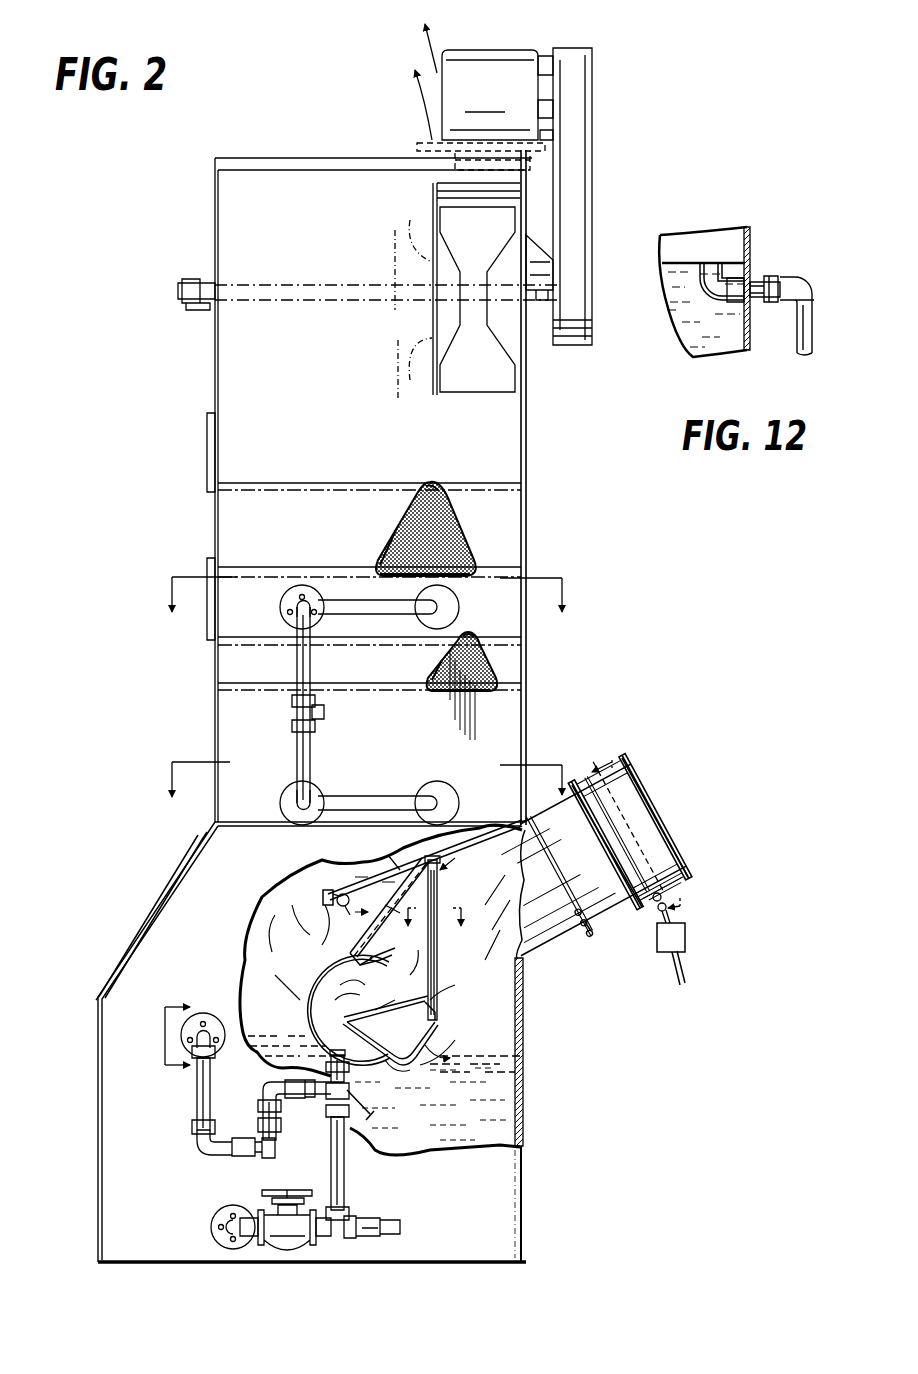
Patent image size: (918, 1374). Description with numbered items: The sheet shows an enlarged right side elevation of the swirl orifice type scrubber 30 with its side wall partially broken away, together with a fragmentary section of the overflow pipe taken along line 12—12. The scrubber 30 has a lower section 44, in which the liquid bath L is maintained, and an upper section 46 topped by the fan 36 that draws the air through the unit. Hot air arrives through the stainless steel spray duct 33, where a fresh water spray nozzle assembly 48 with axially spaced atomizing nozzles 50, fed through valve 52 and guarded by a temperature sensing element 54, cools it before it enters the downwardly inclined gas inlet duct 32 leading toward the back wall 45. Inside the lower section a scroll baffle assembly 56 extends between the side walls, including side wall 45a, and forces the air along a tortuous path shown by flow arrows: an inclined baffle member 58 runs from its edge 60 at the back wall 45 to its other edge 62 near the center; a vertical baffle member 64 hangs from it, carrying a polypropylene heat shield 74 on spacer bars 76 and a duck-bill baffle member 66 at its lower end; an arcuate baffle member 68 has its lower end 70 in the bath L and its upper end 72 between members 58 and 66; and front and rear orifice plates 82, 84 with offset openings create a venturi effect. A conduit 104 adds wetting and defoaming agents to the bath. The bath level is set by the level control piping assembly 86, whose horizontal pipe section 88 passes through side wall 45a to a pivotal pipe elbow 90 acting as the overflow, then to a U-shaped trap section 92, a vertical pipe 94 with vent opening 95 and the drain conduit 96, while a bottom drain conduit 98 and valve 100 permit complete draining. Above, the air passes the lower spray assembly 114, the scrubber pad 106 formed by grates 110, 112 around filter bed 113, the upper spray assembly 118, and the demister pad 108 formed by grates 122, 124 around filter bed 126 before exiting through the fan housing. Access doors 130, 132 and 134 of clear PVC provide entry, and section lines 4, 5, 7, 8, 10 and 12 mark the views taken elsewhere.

In FIG. 2, the fan 36 is at (447, 215).
In FIG. 2, the upper section 46 is at (526, 430).
In FIG. 2, the access door 130 is at (207, 425).
In FIG. 2, the access door 132 is at (207, 635).
In FIG. 2, the access door 134 is at (178, 868).
In FIG. 2, the lower section 44 is at (103, 1105).
In FIG. 2, the upper perforated polypropylene support grate 122 is at (432, 482).
In FIG. 2, the intermediate filter bed 126 is at (400, 527).
In FIG. 2, the demister pad 108 is at (458, 512).
In FIG. 2, the lower perforated polypropylene support grate 124 is at (407, 574).
In FIG. 2, the scrubber pad 106 is at (492, 662).
In FIG. 2, the upper perforated polypropylene support grate 110 is at (465, 634).
In FIG. 2, the intermediate filter bed 113 is at (443, 663).
In FIG. 2, the lower perforated polypropylene support grate 112 is at (460, 690).
In FIG. 2, the upper fresh water spray assembly 118 is at (370, 598).
In FIG. 2, the lower fresh water spray assembly 114 is at (392, 800).
In FIG. 2, the section line 10- 10 is at (367, 583).
In FIG. 2, the section line 8- 8 is at (366, 768).
In FIG. 2, the section line 12- 12 is at (167, 1033).
In FIG. 2, the section line 5- 5 is at (434, 928).
In FIG. 2, the section line 7- 7 is at (385, 874).
In FIG. 2, the section line 4- 4 is at (642, 829).
In FIG. 2, the swirl orifice type scrubber 30 is at (567, 632).
In FIG. 2, the gas inlet duct 32 is at (540, 952).
In FIG. 2, the atomizing nozzles 50 is at (603, 792).
In FIG. 2, the fresh water spray duct 33 is at (684, 876).
In FIG. 2, the temperature sensing element 54 is at (592, 915).
In FIG. 2, the fresh water spray nozzle assembly 48 is at (656, 910).
In FIG. 2, the valve 52 is at (688, 926).
In FIG. 2, the edge 60 is at (522, 820).
In FIG. 2, the back wall 45 is at (519, 1012).
In FIG. 2, the side wall 45a is at (500, 1210).
In FIG. 12, the side wall 45a is at (751, 235).
In FIG. 2, the liquid bath L is at (520, 1062).
In FIG. 2, the scroll baffle assembly 56 is at (335, 962).
In FIG. 2, the downwardly inclined baffle member 58 is at (435, 848).
In FIG. 2, the edge 62 is at (328, 896).
In FIG. 2, the conduit 104 is at (350, 912).
In FIG. 2, the rear orifice plate 84 is at (385, 930).
In FIG. 2, the front orifice plate 82 is at (372, 950).
In FIG. 2, the upper horizontally extending end 72 is at (375, 968).
In FIG. 2, the heat shield 74 is at (439, 880).
In FIG. 2, the spacer bars 76 is at (441, 860).
In FIG. 2, the vertical baffle member 64 is at (425, 998).
In FIG. 2, the arcuate baffle member 68 is at (305, 1010).
In FIG. 2, the duck-bill baffle member 66 is at (405, 1062).
In FIG. 2, the lower end 70 is at (372, 1115).
In FIG. 2, the vent opening 95 is at (333, 1070).
In FIG. 2, the vertical pipe 94 is at (345, 1178).
In FIG. 2, the vertical U-shaped pipe section 92 is at (238, 1118).
In FIG. 2, the level control piping assembly 86 is at (236, 1170).
In FIG. 12, the level control piping assembly 86 is at (817, 298).
In FIG. 2, the valve 100 is at (285, 1250).
In FIG. 2, the bottom drain conduit 98 is at (236, 1248).
In FIG. 2, the drain conduit 96 is at (380, 1220).
In FIG. 12, the pipe elbow 90 is at (710, 265).
In FIG. 12, the horizontal pipe section 88 is at (780, 280).